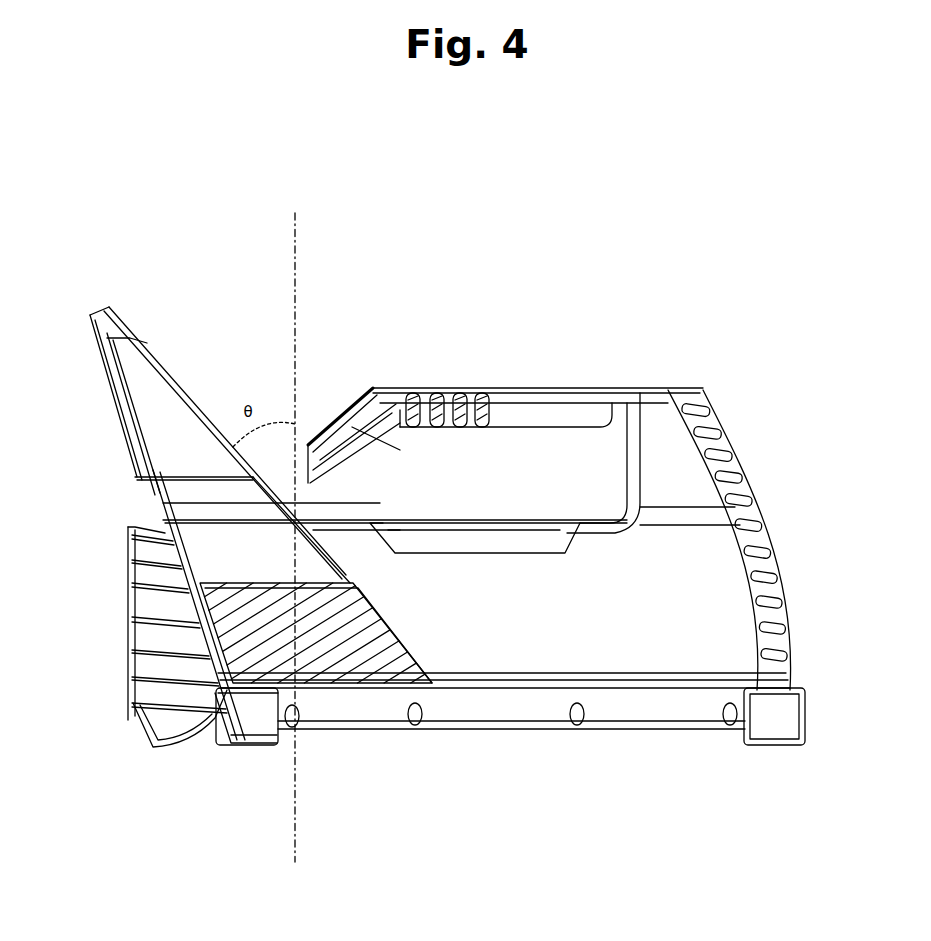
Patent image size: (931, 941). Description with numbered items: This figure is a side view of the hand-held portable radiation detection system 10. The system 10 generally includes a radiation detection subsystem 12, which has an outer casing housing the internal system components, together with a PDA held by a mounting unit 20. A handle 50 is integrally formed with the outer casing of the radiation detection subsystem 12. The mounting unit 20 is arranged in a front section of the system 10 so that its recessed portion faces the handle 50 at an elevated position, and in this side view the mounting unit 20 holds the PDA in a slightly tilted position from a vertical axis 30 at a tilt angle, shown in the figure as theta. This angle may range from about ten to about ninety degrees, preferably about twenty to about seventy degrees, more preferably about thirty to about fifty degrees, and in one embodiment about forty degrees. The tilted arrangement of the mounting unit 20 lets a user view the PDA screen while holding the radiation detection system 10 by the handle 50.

The hand-held portable radiation detection system 10 is at (717, 241).
The radiation detection subsystem 12 is at (620, 650).
The mounting unit 20 is at (106, 308).
The vertical axis 30 is at (297, 228).
The handle 50 is at (533, 390).